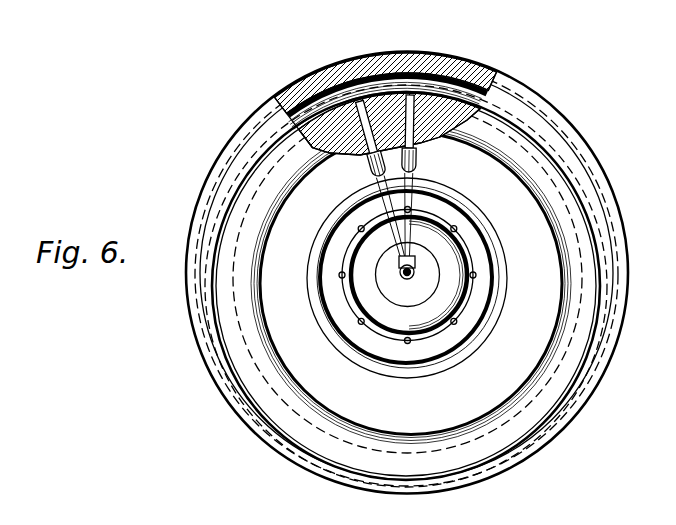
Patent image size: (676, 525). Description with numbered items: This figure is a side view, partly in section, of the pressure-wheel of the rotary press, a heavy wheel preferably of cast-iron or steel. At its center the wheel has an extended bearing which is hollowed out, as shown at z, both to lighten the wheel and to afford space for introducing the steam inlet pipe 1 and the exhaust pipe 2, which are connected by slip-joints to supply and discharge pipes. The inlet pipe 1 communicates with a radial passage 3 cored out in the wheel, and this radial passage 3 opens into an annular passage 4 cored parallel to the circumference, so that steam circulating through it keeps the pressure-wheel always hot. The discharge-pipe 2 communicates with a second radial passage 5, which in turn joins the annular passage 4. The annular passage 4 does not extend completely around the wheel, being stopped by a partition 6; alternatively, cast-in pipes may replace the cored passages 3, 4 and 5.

The steam inlet pipe 1 is at (383, 250).
The exhaust pipe 2 is at (403, 277).
The radial passage 3 is at (340, 78).
The annular passage 4 is at (496, 64).
The radial passage 5 is at (450, 67).
The partition 6 is at (408, 62).
The hollow of central bearing Z is at (419, 287).